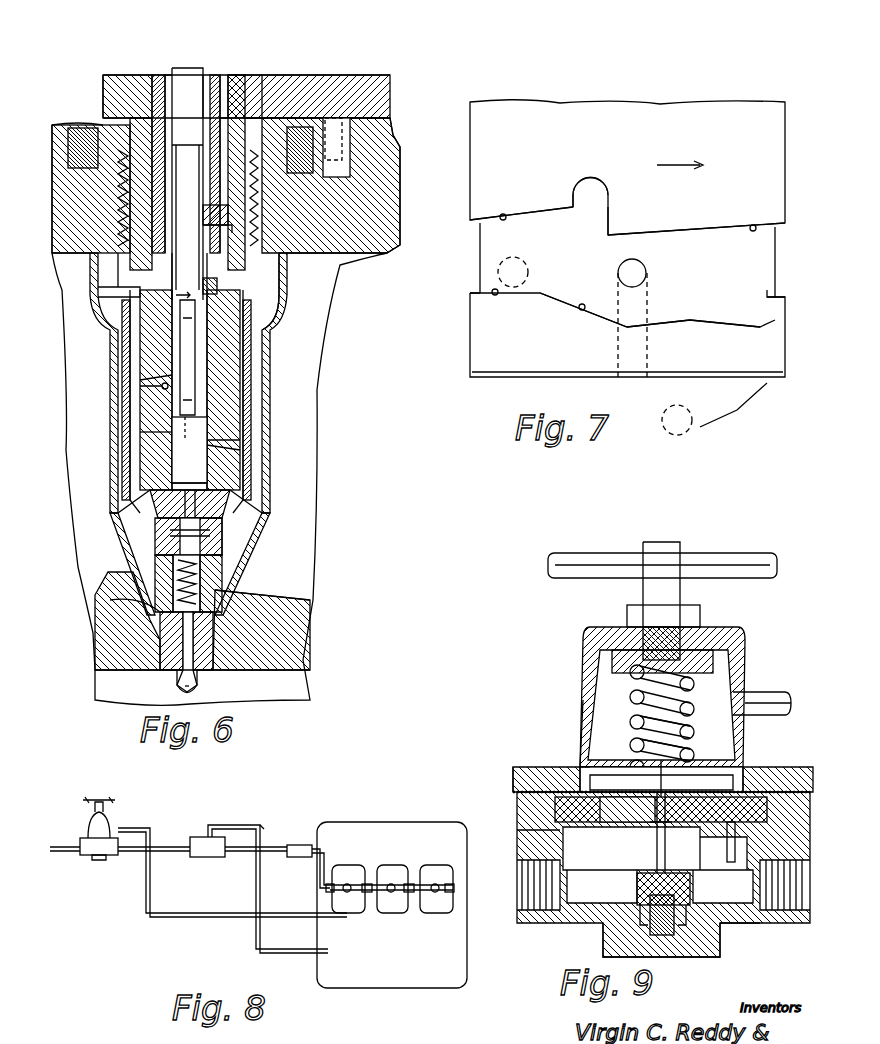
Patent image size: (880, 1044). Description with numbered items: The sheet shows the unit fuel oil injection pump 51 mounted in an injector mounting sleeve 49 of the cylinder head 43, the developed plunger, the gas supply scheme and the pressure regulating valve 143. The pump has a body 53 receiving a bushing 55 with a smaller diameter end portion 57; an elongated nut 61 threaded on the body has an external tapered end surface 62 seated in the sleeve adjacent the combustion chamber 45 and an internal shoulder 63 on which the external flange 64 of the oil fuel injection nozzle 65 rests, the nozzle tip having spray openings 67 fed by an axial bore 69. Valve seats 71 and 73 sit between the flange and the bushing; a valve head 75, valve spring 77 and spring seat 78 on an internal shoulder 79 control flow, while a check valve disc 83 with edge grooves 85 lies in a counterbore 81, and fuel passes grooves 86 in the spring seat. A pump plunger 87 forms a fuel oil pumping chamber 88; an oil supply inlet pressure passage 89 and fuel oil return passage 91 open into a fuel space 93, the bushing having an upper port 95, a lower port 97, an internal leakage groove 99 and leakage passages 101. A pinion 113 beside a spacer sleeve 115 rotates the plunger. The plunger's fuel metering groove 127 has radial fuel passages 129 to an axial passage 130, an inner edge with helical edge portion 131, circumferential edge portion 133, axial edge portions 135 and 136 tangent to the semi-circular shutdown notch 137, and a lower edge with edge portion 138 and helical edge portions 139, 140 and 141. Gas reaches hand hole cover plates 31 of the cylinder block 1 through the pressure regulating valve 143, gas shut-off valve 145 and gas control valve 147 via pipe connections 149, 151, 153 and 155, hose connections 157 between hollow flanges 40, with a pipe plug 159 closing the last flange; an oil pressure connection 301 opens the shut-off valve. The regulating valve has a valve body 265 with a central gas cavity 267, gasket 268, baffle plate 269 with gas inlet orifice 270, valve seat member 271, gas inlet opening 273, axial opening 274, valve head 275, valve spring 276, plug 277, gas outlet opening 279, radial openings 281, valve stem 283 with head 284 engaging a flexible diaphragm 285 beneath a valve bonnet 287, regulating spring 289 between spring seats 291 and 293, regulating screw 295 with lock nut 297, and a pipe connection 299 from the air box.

In FIG. 8, the engine cylinder block 1 is at (422, 822).
In FIG. 8, the hand hole cover plate 31 is at (345, 905).
In FIG. 8, the hollow flange 40 is at (350, 884).
In FIG. 6, the cylinder head 43 is at (370, 206).
In FIG. 6, the combustion chamber 45 is at (275, 690).
In FIG. 6, the injector mounting sleeve 49 is at (270, 405).
In FIG. 6, the unit fuel oil injection pump 51 is at (336, 69).
In FIG. 6, the body 53 is at (390, 101).
In FIG. 6, the bushing 55 is at (240, 357).
In FIG. 6, the smaller diameter end portion 57 is at (215, 215).
In FIG. 6, the elongated nut 61 is at (275, 292).
In FIG. 6, the external tapered end surface 62 is at (112, 592).
In FIG. 6, the internal shoulder 63 is at (248, 600).
In FIG. 6, the external flange 64 is at (173, 576).
In FIG. 6, the oil fuel injection nozzle 65 is at (176, 681).
In FIG. 6, the spray openings 67 is at (198, 688).
In FIG. 6, the axial bore 69 is at (202, 680).
In FIG. 6, the valve seat 71 is at (224, 531).
In FIG. 6, the valve seat 73 is at (186, 495).
In FIG. 6, the valve head 75 is at (145, 545).
In FIG. 6, the valve spring 77 is at (222, 582).
In FIG. 6, the spring seat 78 is at (240, 612).
In FIG. 6, the internal shoulder 79 is at (183, 646).
In FIG. 6, the counterbore 81 is at (152, 504).
In FIG. 6, the check valve disc 83 is at (228, 504).
In FIG. 6, the grooves 85 is at (158, 526).
In FIG. 6, the grooves 86 is at (155, 613).
In FIG. 6, the pump plunger 87 is at (192, 68).
In FIG. 7, the pump plunger 87 is at (650, 120).
In FIG. 6, the fuel oil pumping chamber 88 is at (172, 432).
In FIG. 6, the oil supply inlet pressure passage 89 is at (115, 75).
In FIG. 6, the fuel oil return passage 91 is at (246, 75).
In FIG. 6, the fuel space 93 is at (251, 380).
In FIG. 6, the upper port 95 is at (160, 386).
In FIG. 7, the upper port 95 is at (530, 265).
In FIG. 6, the lower port 97 is at (212, 441).
In FIG. 7, the lower port 97 is at (660, 410).
In FIG. 6, the internal leakage groove 99 is at (203, 286).
In FIG. 6, the leakage passages 101 is at (140, 292).
In FIG. 6, the pinion 113 is at (166, 75).
In FIG. 6, the spacer sleeve 115 is at (152, 112).
In FIG. 6, the fuel metering groove 127 is at (186, 355).
In FIG. 7, the fuel metering groove 127 is at (750, 318).
In FIG. 7, the radial fuel passages 129 is at (642, 264).
In FIG. 6, the axial passage 130 is at (188, 450).
In FIG. 7, the helical edge portion 131 is at (502, 215).
In FIG. 7, the circumferential edge portion 133 is at (662, 232).
In FIG. 7, the axially extending edge portion 135 is at (571, 205).
In FIG. 7, the axially extending edge portion 136 is at (612, 212).
In FIG. 7, the semi-circular edge portion 137 is at (595, 178).
In FIG. 7, the edge portion 138 is at (778, 297).
In FIG. 7, the helical edge portion 139 is at (583, 308).
In FIG. 7, the helical edge portion 140 is at (667, 320).
In FIG. 7, the helical edge portion 141 is at (710, 322).
In FIG. 9, the pressure regulating valve 143 is at (575, 681).
In FIG. 8, the pressure regulating valve 143 is at (89, 824).
In FIG. 8, the gas shut-off valve 145 is at (203, 858).
In FIG. 8, the gas control valve 147 is at (295, 845).
In FIG. 8, the pipe connection 149 is at (62, 855).
In FIG. 8, the pipe connection 151 is at (168, 845).
In FIG. 8, the pipe connection 153 is at (248, 857).
In FIG. 8, the gas supply pipe connection 155 is at (320, 875).
In FIG. 8, the flexible gas hose connections 157 is at (338, 880).
In FIG. 8, the pipe plug 159 is at (438, 865).
In FIG. 9, the valve body 265 is at (555, 840).
In FIG. 9, the central gas cavity 267 is at (762, 780).
In FIG. 9, the gasket 268 is at (545, 800).
In FIG. 9, the baffle plate 269 is at (578, 790).
In FIG. 9, the gas inlet orifice 270 is at (700, 795).
In FIG. 9, the gas valve seat member 271 is at (625, 797).
In FIG. 9, the gas inlet opening 273 is at (775, 912).
In FIG. 9, the axial opening 274 is at (705, 860).
In FIG. 9, the valve head 275 is at (637, 880).
In FIG. 9, the valve spring 276 is at (725, 925).
In FIG. 9, the plug 277 is at (620, 943).
In FIG. 9, the gas outlet opening 279 is at (550, 925).
In FIG. 9, the radial openings 281 is at (690, 797).
In FIG. 9, the valve stem 283 is at (655, 850).
In FIG. 9, the head 284 is at (640, 760).
In FIG. 9, the flexible diaphragm 285 is at (570, 790).
In FIG. 9, the valve bonnet 287 is at (745, 650).
In FIG. 9, the regulating spring 289 is at (630, 692).
In FIG. 9, the spring seat 291 is at (700, 760).
In FIG. 9, the spring seat 293 is at (612, 660).
In FIG. 9, the regulating screw 295 is at (645, 588).
In FIG. 8, the regulating screw 295 is at (99, 800).
In FIG. 9, the lock nut 297 is at (700, 616).
In FIG. 9, the pipe connection 299 is at (780, 695).
In FIG. 8, the pipe connection 299 is at (146, 900).
In FIG. 8, the oil pressure connection 301 is at (256, 936).